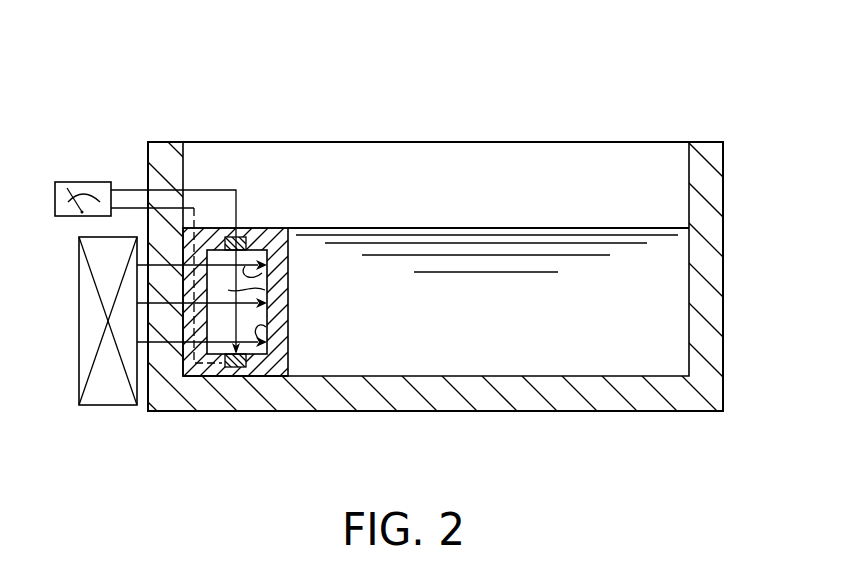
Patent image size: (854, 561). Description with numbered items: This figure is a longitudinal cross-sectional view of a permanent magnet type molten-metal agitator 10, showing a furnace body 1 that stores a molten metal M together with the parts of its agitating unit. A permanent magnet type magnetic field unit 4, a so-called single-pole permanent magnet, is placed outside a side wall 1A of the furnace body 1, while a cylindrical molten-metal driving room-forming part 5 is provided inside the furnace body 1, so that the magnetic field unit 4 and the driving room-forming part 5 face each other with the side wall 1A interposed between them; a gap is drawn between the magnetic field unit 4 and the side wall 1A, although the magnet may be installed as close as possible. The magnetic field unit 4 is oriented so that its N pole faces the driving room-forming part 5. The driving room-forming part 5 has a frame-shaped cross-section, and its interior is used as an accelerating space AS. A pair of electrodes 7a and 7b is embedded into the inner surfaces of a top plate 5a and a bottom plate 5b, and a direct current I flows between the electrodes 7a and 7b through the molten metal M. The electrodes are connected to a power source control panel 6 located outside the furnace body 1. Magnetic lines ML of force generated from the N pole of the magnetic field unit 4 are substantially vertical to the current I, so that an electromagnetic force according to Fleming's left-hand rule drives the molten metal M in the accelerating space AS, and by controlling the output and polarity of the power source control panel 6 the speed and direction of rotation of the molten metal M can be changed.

The permanent magnet type molten-metal agitator 10 is at (438, 117).
The furnace body 1 is at (713, 170).
The side wall 1A is at (171, 158).
The permanent magnet type magnetic field unit 4 is at (79, 303).
The molten-metal driving room-forming part 5 is at (288, 318).
The top plate 5a is at (216, 234).
The bottom plate 5b is at (257, 372).
The power source control panel 6 is at (80, 182).
The electrode 7a is at (245, 236).
The electrode 7b is at (231, 368).
The molten metal M is at (652, 272).
The magnetic lines of force ML is at (262, 273).
The direct current I is at (265, 290).
The accelerating space AS is at (260, 340).